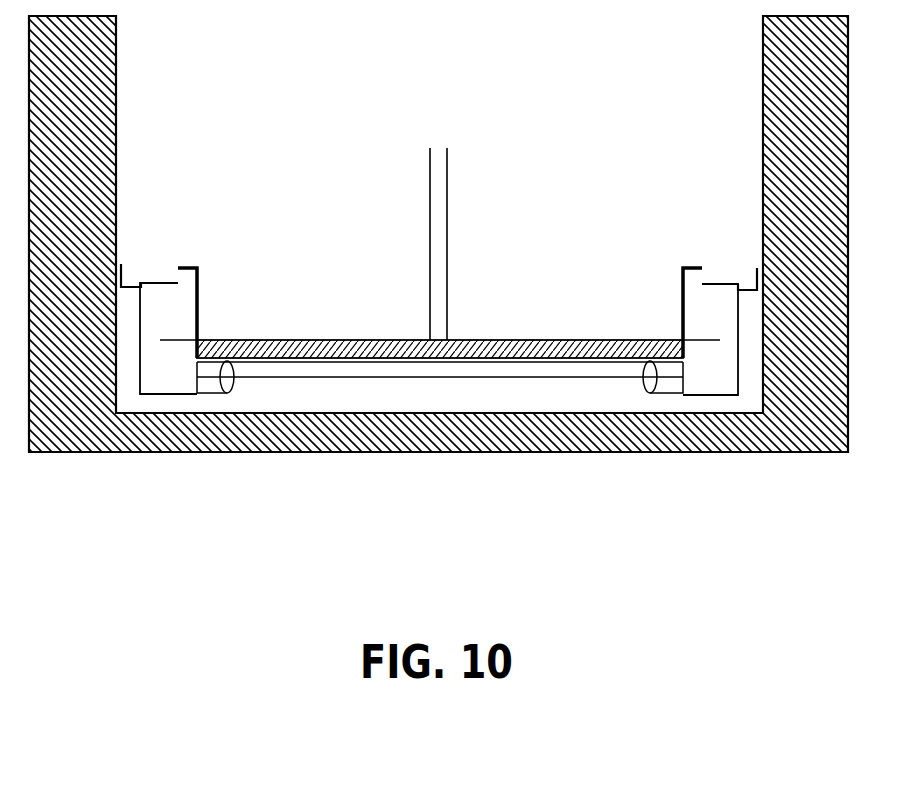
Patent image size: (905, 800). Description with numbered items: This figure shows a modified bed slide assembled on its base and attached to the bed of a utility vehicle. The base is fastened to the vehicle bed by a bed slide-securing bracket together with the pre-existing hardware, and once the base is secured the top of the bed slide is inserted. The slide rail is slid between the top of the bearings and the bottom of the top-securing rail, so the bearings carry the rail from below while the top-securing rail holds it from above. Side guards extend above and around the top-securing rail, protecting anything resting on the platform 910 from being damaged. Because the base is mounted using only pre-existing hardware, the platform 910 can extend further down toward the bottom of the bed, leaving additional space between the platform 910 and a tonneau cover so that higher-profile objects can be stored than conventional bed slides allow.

The platform 910 is at (440, 236).